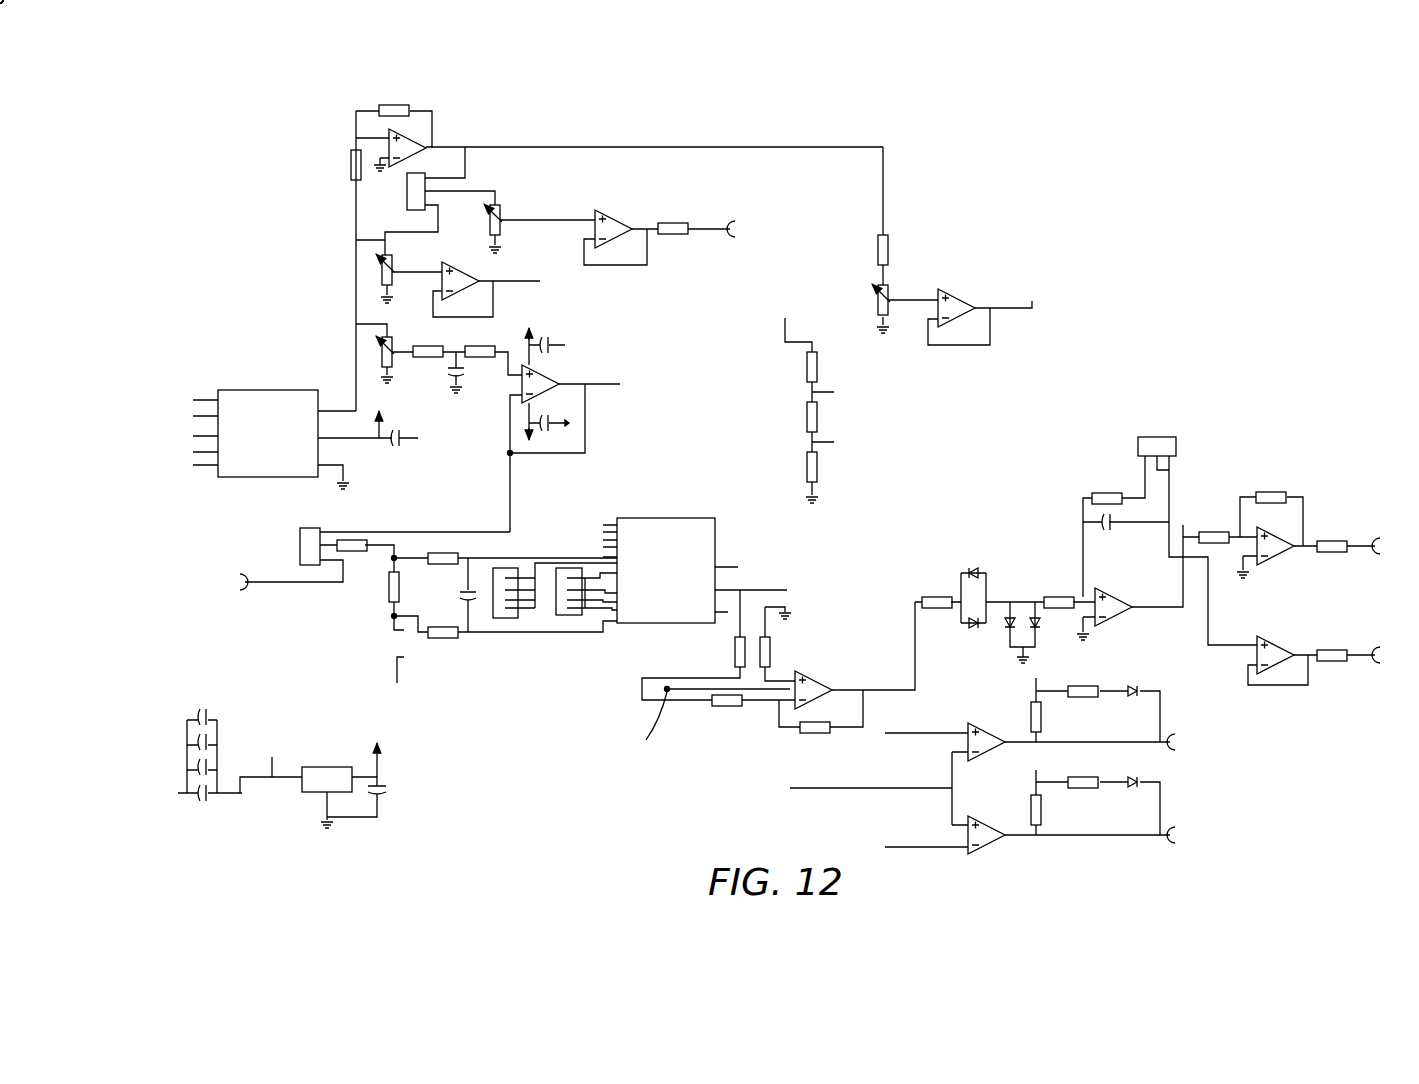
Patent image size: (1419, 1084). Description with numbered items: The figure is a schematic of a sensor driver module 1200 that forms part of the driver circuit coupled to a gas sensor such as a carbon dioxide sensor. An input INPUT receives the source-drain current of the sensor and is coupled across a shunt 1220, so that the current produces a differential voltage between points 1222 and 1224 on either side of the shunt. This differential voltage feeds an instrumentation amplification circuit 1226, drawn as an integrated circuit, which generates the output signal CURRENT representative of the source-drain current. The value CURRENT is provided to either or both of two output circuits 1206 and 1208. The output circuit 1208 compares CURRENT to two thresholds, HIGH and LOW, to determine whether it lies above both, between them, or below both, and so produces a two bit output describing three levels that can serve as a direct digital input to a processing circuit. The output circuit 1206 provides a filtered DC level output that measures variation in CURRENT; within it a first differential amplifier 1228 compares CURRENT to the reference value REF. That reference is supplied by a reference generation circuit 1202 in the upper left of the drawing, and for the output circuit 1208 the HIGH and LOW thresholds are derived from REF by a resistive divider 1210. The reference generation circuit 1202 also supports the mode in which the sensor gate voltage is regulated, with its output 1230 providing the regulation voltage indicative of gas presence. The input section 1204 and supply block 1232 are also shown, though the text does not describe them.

The sensor driver module 1200 is at (1167, 228).
The reference generation circuit 1202 is at (298, 213).
The input stage 1204 is at (586, 651).
The output circuit 1206 is at (1233, 460).
The output circuit 1208 is at (1228, 778).
The resistive divider 1210 is at (746, 373).
The shunt 1220 is at (389, 591).
The point 1222 is at (391, 561).
The point 1224 is at (392, 619).
The instrumentation amplification circuit 1226 is at (609, 520).
The first differential amplifier 1228 is at (816, 672).
The output 1230 is at (757, 206).
The power supply regulator 1232 is at (402, 808).